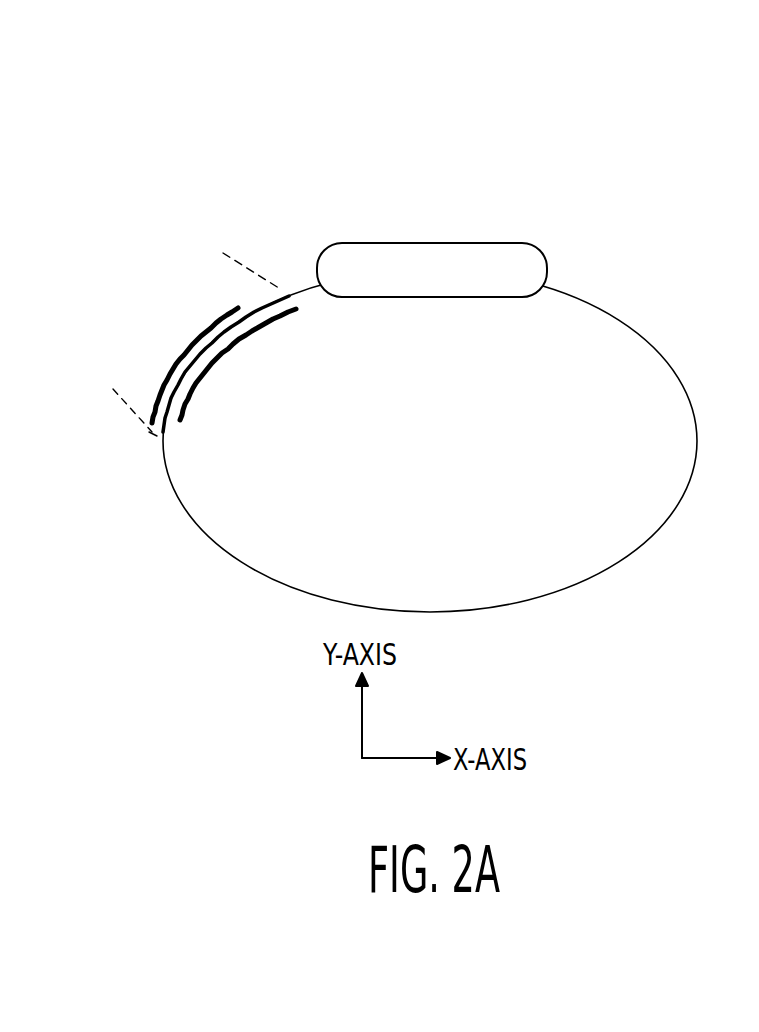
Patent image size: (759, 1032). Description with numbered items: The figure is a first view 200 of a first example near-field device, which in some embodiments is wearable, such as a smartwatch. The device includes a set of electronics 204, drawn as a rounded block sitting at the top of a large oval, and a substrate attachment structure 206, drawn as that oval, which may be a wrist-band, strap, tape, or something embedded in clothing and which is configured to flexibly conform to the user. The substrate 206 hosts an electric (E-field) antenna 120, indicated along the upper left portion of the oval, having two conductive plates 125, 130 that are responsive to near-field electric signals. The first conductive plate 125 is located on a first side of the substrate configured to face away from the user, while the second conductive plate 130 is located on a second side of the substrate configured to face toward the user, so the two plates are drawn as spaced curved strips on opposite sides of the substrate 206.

The first view 200 is at (145, 123).
The set of electronics 204 is at (463, 243).
The substrate attachment structure 206 is at (612, 314).
The electric (E-field) antenna 120 is at (223, 253).
The first conductive plate 125 is at (203, 333).
The second conductive plate 130 is at (212, 365).